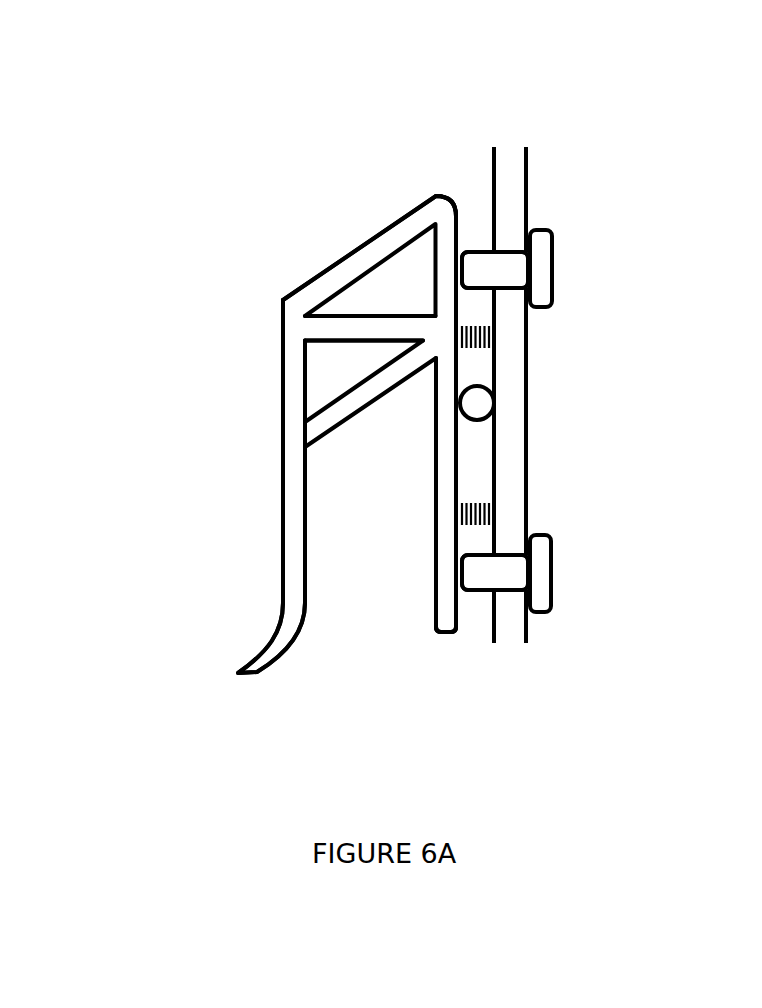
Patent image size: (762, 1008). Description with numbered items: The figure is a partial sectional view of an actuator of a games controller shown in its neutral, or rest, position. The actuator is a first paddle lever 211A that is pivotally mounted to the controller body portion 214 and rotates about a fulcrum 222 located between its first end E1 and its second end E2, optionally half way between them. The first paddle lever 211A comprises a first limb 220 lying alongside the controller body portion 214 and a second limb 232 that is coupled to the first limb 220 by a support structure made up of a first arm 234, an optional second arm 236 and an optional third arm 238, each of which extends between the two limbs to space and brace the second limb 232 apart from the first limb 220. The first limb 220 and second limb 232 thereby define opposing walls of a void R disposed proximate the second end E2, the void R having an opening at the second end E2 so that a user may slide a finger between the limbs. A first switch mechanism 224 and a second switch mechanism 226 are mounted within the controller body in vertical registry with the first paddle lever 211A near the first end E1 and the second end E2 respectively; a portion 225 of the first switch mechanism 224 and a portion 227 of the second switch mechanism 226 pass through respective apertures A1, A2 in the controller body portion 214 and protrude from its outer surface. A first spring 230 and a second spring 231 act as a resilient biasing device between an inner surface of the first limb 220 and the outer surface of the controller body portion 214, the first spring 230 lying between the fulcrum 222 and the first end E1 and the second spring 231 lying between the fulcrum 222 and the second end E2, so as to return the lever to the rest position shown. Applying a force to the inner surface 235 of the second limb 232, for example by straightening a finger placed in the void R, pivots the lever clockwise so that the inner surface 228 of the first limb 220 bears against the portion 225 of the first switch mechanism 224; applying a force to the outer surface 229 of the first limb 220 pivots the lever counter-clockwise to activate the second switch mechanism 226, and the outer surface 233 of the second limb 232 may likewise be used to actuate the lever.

The first paddle lever 211A is at (347, 361).
The controller body portion 214 is at (513, 435).
The first limb 220 is at (447, 470).
The fulcrum 222 is at (478, 403).
The first switch mechanism 224 is at (537, 267).
The portion of the first switch mechanism 225 is at (502, 268).
The second switch mechanism 226 is at (537, 577).
The portion of the second switch mechanism 227 is at (503, 576).
The inner surface of the first limb 228 is at (490, 252).
The outer surface of the first limb 229 is at (437, 493).
The first spring 230 is at (490, 333).
The second spring 231 is at (480, 503).
The second limb 232 is at (295, 498).
The outer surface of the second limb 233 is at (280, 573).
The first arm 234 is at (317, 285).
The inner surface of the second limb 235 is at (308, 563).
The second arm 236 is at (285, 302).
The third arm 238 is at (374, 388).
The first aperture A1 is at (478, 250).
The second aperture A2 is at (493, 590).
The first end E1 is at (443, 193).
The second end E2 is at (447, 633).
The void R is at (354, 612).